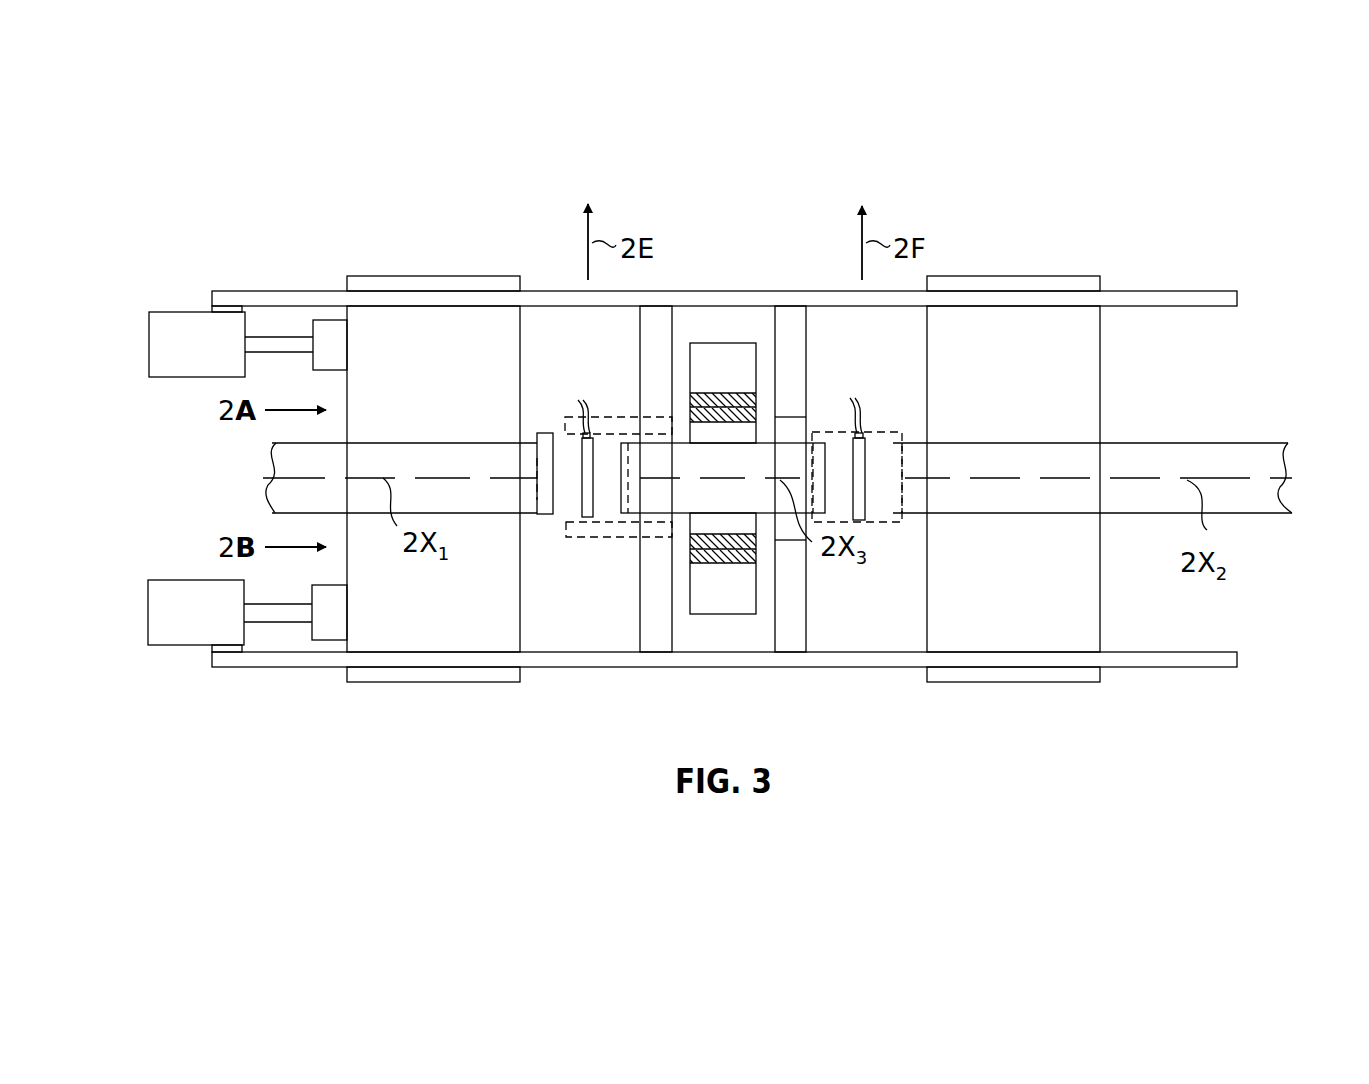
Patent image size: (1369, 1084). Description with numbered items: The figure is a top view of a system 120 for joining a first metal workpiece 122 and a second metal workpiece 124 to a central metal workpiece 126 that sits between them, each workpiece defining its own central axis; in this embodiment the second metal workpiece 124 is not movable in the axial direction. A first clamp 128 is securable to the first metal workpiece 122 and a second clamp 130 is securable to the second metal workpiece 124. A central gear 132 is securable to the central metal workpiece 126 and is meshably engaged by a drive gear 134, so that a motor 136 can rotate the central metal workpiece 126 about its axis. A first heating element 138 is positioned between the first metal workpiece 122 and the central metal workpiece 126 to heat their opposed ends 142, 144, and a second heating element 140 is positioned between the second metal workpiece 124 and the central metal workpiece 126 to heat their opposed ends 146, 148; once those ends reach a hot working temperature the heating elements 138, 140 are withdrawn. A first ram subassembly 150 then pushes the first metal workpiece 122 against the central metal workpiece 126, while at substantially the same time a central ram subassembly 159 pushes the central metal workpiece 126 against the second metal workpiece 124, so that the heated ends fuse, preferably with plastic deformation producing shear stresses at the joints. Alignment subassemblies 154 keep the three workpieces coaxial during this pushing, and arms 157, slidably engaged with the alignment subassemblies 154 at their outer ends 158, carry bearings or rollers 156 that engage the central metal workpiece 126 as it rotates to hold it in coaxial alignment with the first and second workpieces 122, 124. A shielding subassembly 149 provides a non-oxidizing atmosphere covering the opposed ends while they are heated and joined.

The system 120 is at (1151, 266).
The first metal workpiece 122 is at (367, 454).
The second metal workpiece 124 is at (1257, 450).
The central metal workpiece 126 is at (760, 455).
The first clamp 128 is at (463, 614).
The second clamp 130 is at (1048, 614).
The central gear 132 is at (700, 523).
The drive gear 134 is at (693, 398).
The motor 136 is at (718, 600).
The first heating element 138 is at (583, 498).
The second heating element 140 is at (865, 513).
The end of first metal workpiece 142 is at (545, 440).
The end of central metal workpiece 144 is at (630, 512).
The end of second metal workpiece 146 is at (910, 450).
The end of central metal workpiece 148 is at (808, 434).
The shielding subassembly 149 is at (553, 432).
The first ram subassembly 150 is at (156, 622).
The alignment subassembly 154 is at (318, 292).
The bearings or rollers 156 is at (787, 533).
The arm 157 is at (790, 642).
The outer end of arm 158 is at (643, 637).
The central ram subassembly 159 is at (620, 416).